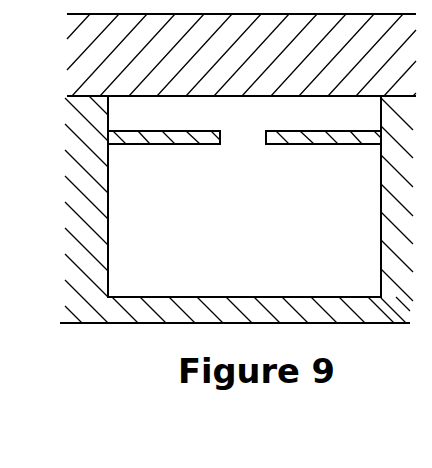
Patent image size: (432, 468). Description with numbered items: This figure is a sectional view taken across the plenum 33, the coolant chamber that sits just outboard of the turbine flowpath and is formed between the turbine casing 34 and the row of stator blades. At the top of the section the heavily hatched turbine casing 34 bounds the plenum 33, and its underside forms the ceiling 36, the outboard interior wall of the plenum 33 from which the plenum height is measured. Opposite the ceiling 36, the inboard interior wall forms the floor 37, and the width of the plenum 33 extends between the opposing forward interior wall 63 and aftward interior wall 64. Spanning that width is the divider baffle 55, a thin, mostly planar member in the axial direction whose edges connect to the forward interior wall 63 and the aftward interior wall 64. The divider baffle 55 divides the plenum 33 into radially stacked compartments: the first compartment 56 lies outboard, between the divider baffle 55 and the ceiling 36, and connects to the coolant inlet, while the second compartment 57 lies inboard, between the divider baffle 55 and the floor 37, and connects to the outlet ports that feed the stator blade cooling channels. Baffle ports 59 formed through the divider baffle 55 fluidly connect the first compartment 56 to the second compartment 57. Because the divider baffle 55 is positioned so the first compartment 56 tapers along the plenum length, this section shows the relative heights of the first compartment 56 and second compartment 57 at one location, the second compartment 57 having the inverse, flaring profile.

The turbine casing 34 is at (110, 65).
The ceiling 36 is at (137, 97).
The plenum 33 is at (261, 204).
The forward interior wall 63 is at (108, 217).
The aftward interior wall 64 is at (381, 202).
The floor 37 is at (152, 297).
The second compartment 57 is at (261, 282).
The first compartment 56 is at (345, 126).
The divider baffle 55 is at (304, 144).
The baffle ports 59 is at (260, 149).